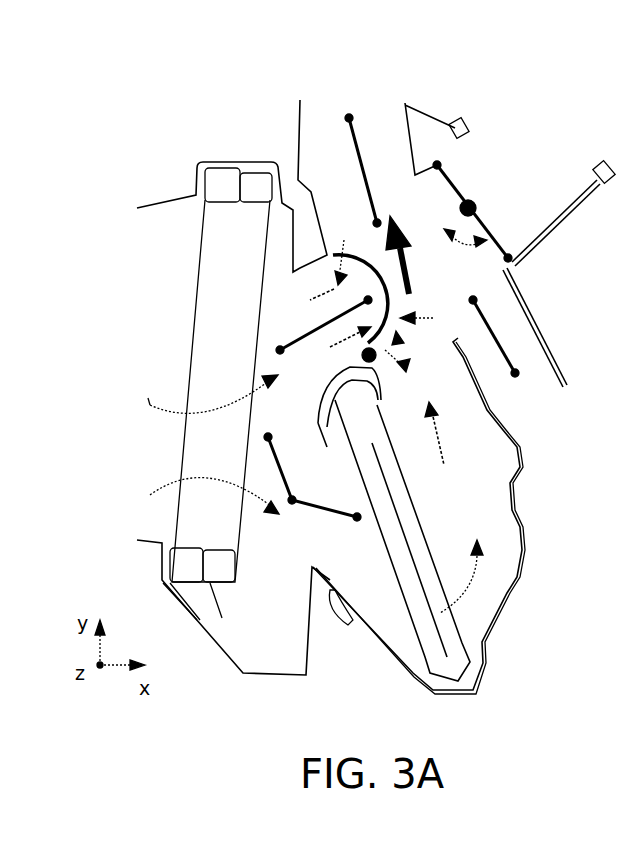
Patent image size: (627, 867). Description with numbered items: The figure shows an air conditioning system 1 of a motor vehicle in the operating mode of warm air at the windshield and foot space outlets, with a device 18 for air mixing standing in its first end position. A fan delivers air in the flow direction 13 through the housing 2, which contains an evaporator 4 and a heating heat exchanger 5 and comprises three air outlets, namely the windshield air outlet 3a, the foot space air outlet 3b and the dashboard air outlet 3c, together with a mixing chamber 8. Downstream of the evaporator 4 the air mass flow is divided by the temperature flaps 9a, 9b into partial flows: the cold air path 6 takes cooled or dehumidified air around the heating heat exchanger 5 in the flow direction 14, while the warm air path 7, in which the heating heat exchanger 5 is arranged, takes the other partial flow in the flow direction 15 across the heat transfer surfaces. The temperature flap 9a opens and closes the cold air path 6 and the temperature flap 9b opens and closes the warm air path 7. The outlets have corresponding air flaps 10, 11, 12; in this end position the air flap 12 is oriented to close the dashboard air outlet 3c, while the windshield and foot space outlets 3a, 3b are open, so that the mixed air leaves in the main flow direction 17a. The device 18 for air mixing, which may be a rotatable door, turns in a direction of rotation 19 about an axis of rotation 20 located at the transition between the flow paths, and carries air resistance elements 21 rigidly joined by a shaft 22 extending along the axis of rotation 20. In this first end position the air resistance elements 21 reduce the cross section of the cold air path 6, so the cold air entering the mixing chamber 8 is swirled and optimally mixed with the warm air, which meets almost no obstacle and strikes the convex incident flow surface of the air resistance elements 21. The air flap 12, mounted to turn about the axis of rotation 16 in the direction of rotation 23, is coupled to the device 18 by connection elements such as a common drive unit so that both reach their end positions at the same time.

The air conditioning system 1 is at (589, 87).
The housing 2 is at (297, 140).
The windshield air outlet 3a is at (376, 104).
The foot space air outlet 3b is at (556, 419).
The dashboard air outlet 3c is at (527, 151).
The evaporator 4 is at (207, 362).
The heating heat exchanger 5 is at (407, 585).
The cold air path 6 is at (300, 322).
The warm air path 7 is at (473, 521).
The mixing chamber 8 is at (438, 279).
The temperature flap 9a is at (312, 333).
The temperature flap 9b is at (320, 507).
The air flap 10 is at (355, 140).
The air flap 11 is at (503, 343).
The air flap 12 is at (460, 187).
The flow direction 13 is at (167, 480).
The flow direction 14 is at (483, 538).
The flow direction 15 is at (435, 415).
The axis of rotation 16 is at (478, 212).
The flow direction 17a is at (400, 234).
The device for air mixing 18 is at (434, 322).
The direction of rotation 19 is at (400, 340).
The axis of rotation 20 is at (403, 405).
The air resistance elements 21 is at (395, 310).
The shaft 22 is at (406, 437).
The direction of rotation 23 is at (530, 293).